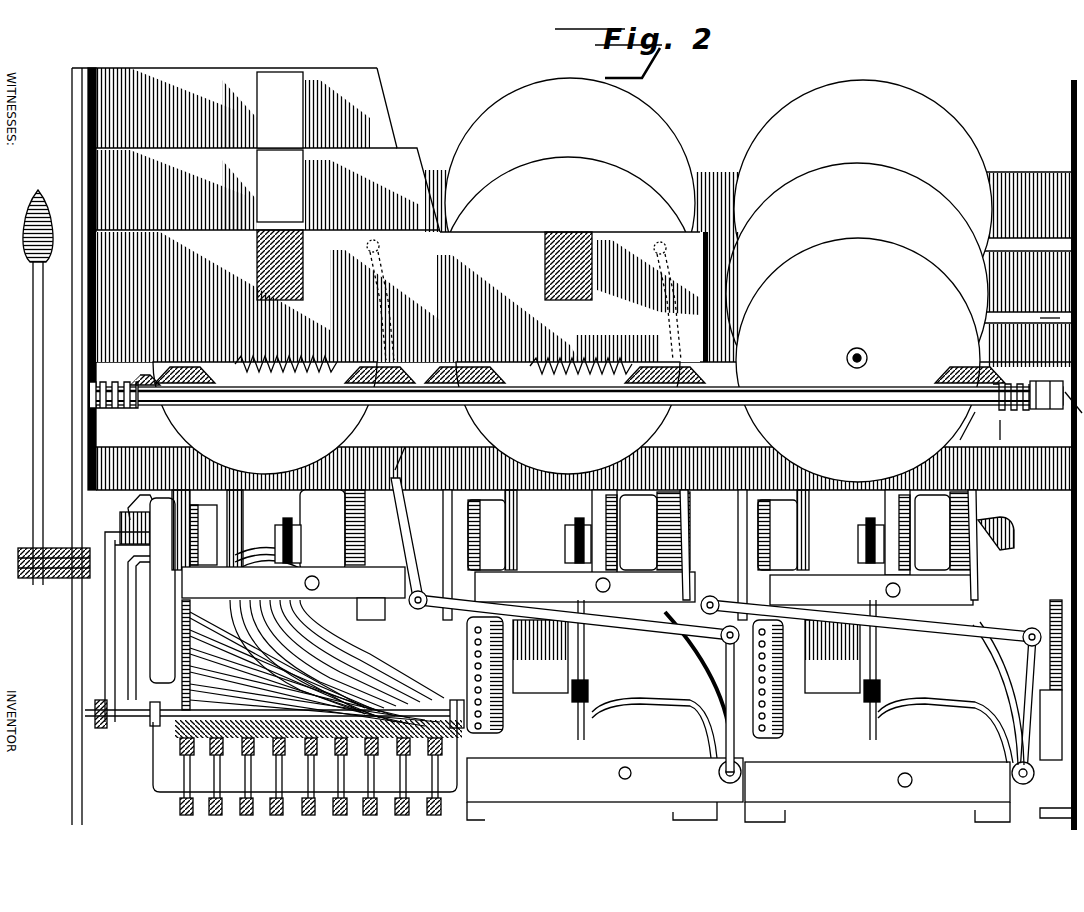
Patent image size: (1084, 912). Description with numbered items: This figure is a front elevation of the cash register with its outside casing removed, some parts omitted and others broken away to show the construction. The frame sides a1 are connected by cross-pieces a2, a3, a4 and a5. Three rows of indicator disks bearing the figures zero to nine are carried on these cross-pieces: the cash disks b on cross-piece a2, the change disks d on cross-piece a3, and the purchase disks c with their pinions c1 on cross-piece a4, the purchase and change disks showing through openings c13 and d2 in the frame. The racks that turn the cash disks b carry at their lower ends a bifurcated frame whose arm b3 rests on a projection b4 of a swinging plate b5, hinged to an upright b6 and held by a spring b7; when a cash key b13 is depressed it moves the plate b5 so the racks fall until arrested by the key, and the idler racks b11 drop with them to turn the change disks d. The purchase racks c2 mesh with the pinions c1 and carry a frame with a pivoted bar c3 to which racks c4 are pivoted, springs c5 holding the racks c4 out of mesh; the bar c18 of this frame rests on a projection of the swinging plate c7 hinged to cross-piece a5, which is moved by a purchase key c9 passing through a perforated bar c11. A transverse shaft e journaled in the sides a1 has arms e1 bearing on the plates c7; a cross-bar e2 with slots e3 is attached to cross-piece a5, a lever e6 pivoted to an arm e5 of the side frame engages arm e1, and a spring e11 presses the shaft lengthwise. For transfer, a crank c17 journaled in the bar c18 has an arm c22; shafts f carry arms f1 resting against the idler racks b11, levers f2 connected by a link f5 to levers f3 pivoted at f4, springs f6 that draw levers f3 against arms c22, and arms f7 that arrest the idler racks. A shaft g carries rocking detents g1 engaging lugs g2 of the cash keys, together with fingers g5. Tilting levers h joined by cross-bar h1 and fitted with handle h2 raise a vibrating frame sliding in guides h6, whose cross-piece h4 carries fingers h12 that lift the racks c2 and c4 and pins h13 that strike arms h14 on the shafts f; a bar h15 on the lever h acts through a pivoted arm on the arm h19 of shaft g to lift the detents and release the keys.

The side of the frame a1 is at (72, 120).
The cross-piece a2 is at (1010, 185).
The cross-piece a3 is at (1035, 314).
The cross-piece a4 is at (1028, 388).
The cross-piece a5 is at (1013, 427).
The cash indicator disk b is at (645, 122).
The arm of bifurcated frame b3 is at (170, 812).
The projection b4 is at (270, 548).
The swinging plate b5 is at (686, 656).
The upright b6 is at (586, 655).
The spring b7 is at (590, 672).
The idler rack b11 is at (388, 540).
The cash key b13 is at (330, 660).
The purchase indicator disk c is at (567, 360).
The pinion c1 is at (462, 498).
The rack c2 is at (724, 587).
The pivoted bar c3 is at (195, 760).
The rack c4 is at (550, 532).
The spring c5 is at (178, 505).
The swinging plate c7 is at (215, 520).
The purchase key c9 is at (182, 620).
The perforated bar c11 is at (672, 565).
The opening c13 is at (303, 258).
The crank c17 is at (351, 527).
The bar c18 is at (293, 593).
The crank arm c22 is at (414, 450).
The change indicator disk d is at (713, 291).
The opening d2 is at (300, 208).
The shaft e is at (576, 406).
The arm e1 is at (128, 497).
The cross-bar e2 is at (145, 369).
The longitudinal slot e3 is at (979, 425).
The arm of side frame e5 is at (118, 520).
The lever e6 is at (143, 538).
The spring e11 is at (130, 400).
The shaft f is at (718, 773).
The arm f1 is at (695, 650).
The lever f2 is at (725, 700).
The lever f3 is at (396, 450).
The pivot f4 is at (380, 248).
The link f5 is at (650, 626).
The spring f6 is at (322, 360).
The arm f7 is at (692, 565).
The shaft g is at (420, 710).
The rocking detent g1 is at (150, 740).
The lug g2 is at (430, 772).
The finger g5 is at (150, 745).
The tilting lever h is at (105, 650).
The cross-bar h1 is at (230, 536).
The operating handle h2 is at (33, 410).
The cross-piece of vibrating frame h4 is at (580, 715).
The guide h6 is at (1063, 418).
The finger h12 is at (500, 760).
The pin h13 is at (738, 790).
The arm h14 is at (660, 712).
The bar h15 is at (110, 690).
The arm h19 is at (92, 718).